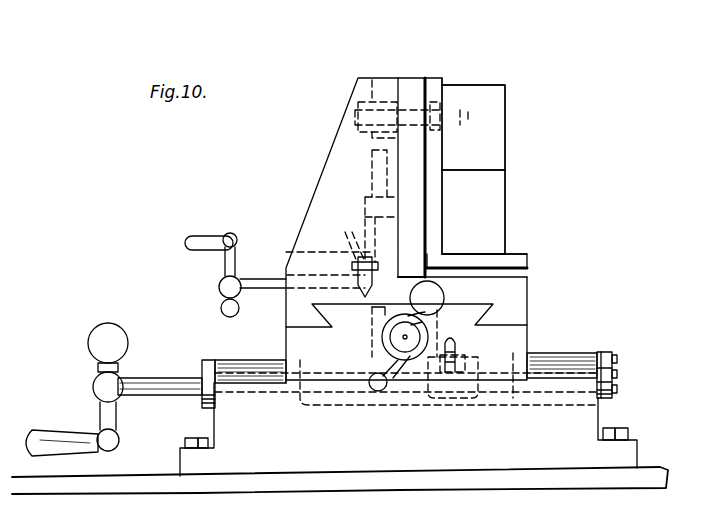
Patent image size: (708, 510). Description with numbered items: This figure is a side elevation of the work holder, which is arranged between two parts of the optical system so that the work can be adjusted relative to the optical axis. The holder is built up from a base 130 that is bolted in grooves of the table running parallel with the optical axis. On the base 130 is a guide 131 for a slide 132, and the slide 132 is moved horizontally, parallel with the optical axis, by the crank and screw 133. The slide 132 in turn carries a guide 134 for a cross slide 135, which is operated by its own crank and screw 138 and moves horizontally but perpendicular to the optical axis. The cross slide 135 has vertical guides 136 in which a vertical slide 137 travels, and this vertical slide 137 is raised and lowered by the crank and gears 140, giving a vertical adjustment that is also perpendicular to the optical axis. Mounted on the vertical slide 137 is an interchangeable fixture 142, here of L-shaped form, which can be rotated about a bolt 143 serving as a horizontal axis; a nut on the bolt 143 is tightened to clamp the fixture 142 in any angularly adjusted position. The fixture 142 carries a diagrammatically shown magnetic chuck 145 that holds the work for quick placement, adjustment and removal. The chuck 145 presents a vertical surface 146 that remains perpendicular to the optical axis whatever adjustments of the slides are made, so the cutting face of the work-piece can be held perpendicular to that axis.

The base 130 is at (585, 421).
The guide 131 is at (573, 360).
The slide 132 is at (513, 340).
The crank and screw 133 is at (173, 375).
The guide 134 is at (513, 300).
The cross slide 135 is at (480, 287).
The vertical guides 136 is at (382, 87).
The vertical slide 137 is at (412, 87).
The crank and screw 138 is at (372, 343).
The crank and gears 140 is at (257, 281).
The fixture 142 is at (435, 215).
The bolt 143 is at (408, 118).
The magnetic chuck 145 is at (474, 97).
The vertical surface 146 is at (501, 153).